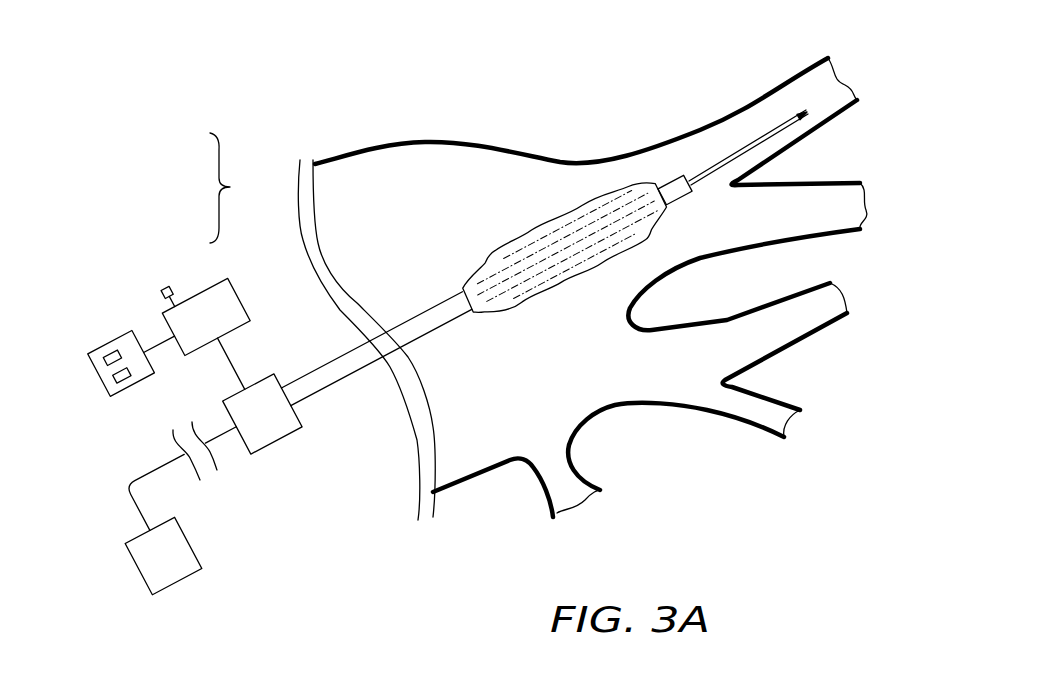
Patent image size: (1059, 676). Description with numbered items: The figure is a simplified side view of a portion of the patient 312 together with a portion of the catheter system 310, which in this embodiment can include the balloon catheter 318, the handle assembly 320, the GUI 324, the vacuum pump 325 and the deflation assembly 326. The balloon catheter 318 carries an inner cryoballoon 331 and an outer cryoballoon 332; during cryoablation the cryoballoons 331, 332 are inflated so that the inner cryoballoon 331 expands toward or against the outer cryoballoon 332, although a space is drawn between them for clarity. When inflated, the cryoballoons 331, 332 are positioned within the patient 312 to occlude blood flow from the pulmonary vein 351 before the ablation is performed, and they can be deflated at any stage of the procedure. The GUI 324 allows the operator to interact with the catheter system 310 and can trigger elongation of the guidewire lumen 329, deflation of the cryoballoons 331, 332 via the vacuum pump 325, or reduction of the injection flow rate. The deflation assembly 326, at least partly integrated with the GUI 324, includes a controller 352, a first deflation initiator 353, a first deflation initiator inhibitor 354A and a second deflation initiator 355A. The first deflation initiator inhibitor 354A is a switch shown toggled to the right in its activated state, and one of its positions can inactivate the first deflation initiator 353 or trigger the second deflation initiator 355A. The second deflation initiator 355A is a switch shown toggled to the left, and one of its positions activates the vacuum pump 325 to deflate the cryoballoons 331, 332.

The catheter system 310 is at (360, 129).
The patient 312 is at (790, 66).
The balloon catheter 318 is at (482, 342).
The handle assembly 320 is at (273, 443).
The GUI 324 is at (102, 338).
The vacuum pump 325 is at (137, 570).
The deflation assembly 326 is at (240, 188).
The guidewire lumen 329 is at (668, 182).
The inner cryoballoon 331 is at (512, 240).
The outer cryoballoon 332 is at (593, 197).
The pulmonary vein 351 is at (757, 127).
The controller 352 is at (208, 283).
The first deflation initiator 353 is at (165, 288).
The first deflation initiator inhibitor 354A is at (123, 374).
The second deflation initiator 355A is at (112, 357).